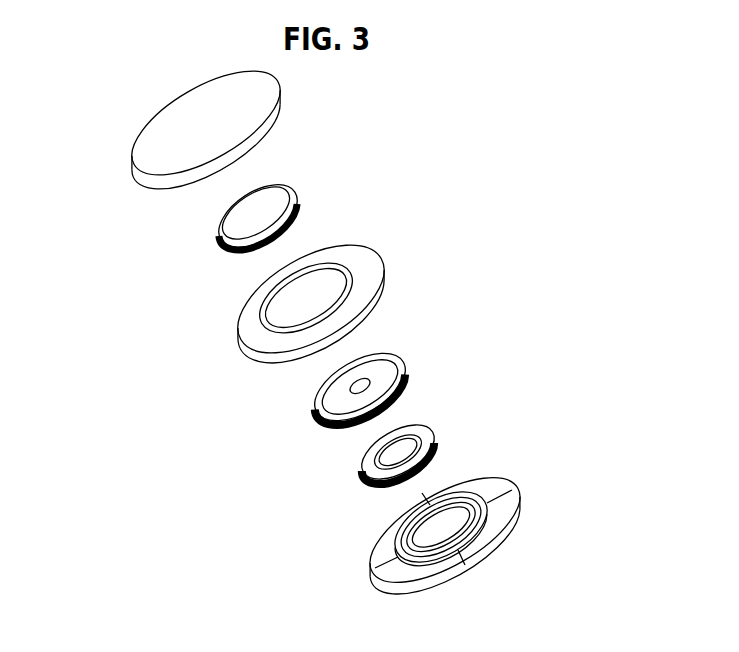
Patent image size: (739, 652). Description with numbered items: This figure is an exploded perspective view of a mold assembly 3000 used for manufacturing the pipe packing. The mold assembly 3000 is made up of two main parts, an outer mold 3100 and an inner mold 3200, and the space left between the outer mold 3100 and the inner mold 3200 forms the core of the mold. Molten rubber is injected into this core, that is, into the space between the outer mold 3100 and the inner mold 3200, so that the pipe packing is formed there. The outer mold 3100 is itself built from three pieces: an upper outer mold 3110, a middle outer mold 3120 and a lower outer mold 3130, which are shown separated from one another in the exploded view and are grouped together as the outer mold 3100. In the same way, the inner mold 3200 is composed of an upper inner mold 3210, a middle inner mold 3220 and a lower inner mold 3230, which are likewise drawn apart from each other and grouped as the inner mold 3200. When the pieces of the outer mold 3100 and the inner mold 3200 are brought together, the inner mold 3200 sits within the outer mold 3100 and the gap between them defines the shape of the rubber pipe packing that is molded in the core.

The mold assembly 3000 is at (560, 101).
The outer mold 3100 is at (515, 232).
The upper outer mold 3110 is at (272, 109).
The middle outer mold 3120 is at (385, 285).
The lower outer mold 3130 is at (493, 485).
The inner mold 3200 is at (185, 475).
The upper inner mold 3210 is at (223, 238).
The middle inner mold 3220 is at (318, 410).
The lower inner mold 3230 is at (365, 477).